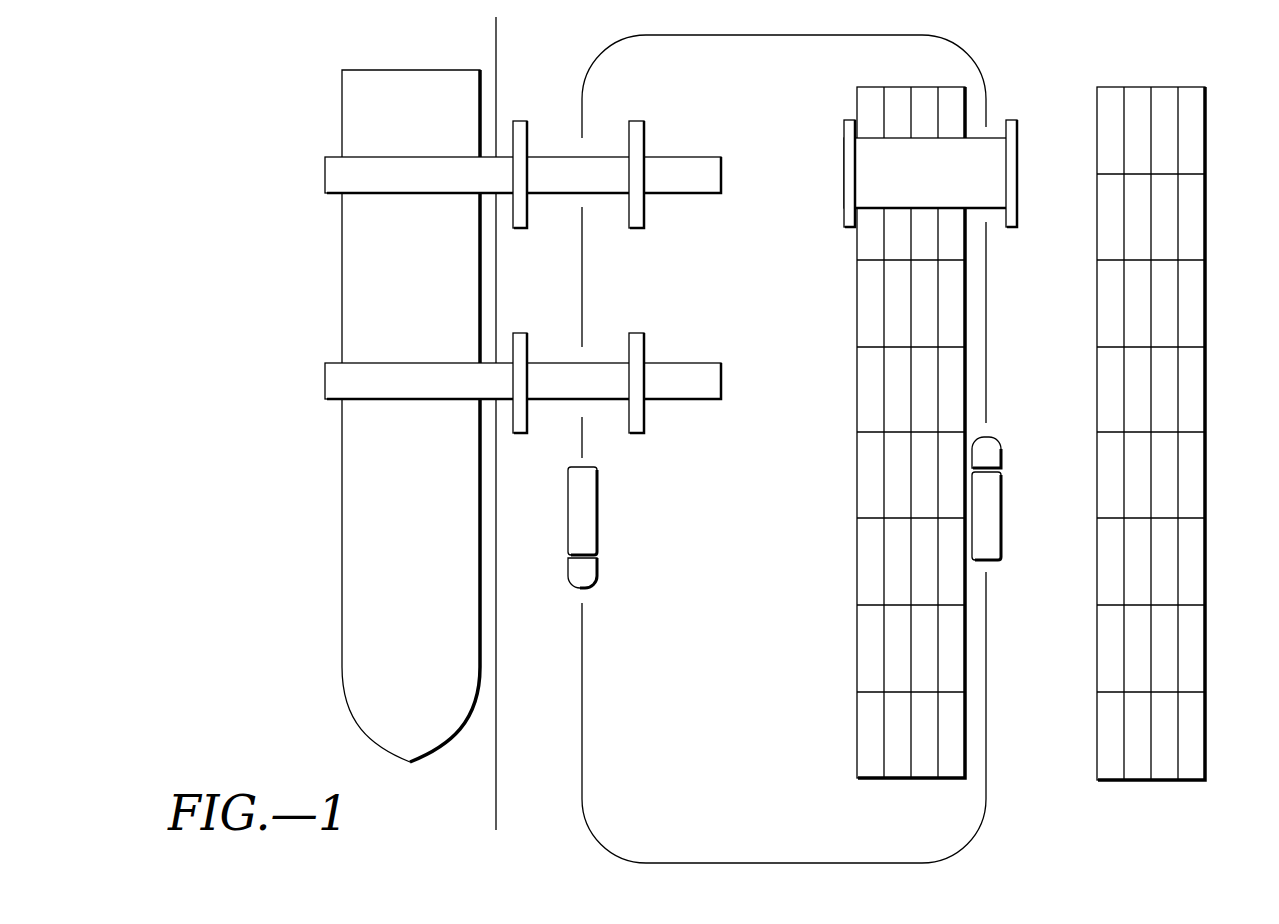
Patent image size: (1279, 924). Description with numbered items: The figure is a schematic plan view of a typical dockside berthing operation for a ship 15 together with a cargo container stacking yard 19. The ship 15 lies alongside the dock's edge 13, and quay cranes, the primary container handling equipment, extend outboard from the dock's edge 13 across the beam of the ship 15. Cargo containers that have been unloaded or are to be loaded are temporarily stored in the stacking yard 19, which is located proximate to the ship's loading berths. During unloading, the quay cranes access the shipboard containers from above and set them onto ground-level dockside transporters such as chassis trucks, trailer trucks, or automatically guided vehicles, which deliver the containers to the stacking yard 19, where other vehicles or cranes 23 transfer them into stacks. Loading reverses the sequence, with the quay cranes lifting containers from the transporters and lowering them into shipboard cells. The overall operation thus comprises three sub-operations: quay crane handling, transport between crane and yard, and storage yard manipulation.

The dock's edge 13 is at (496, 32).
The ship 15 is at (380, 70).
The stacking yard 19 is at (1068, 386).
The cranes 23 is at (844, 165).